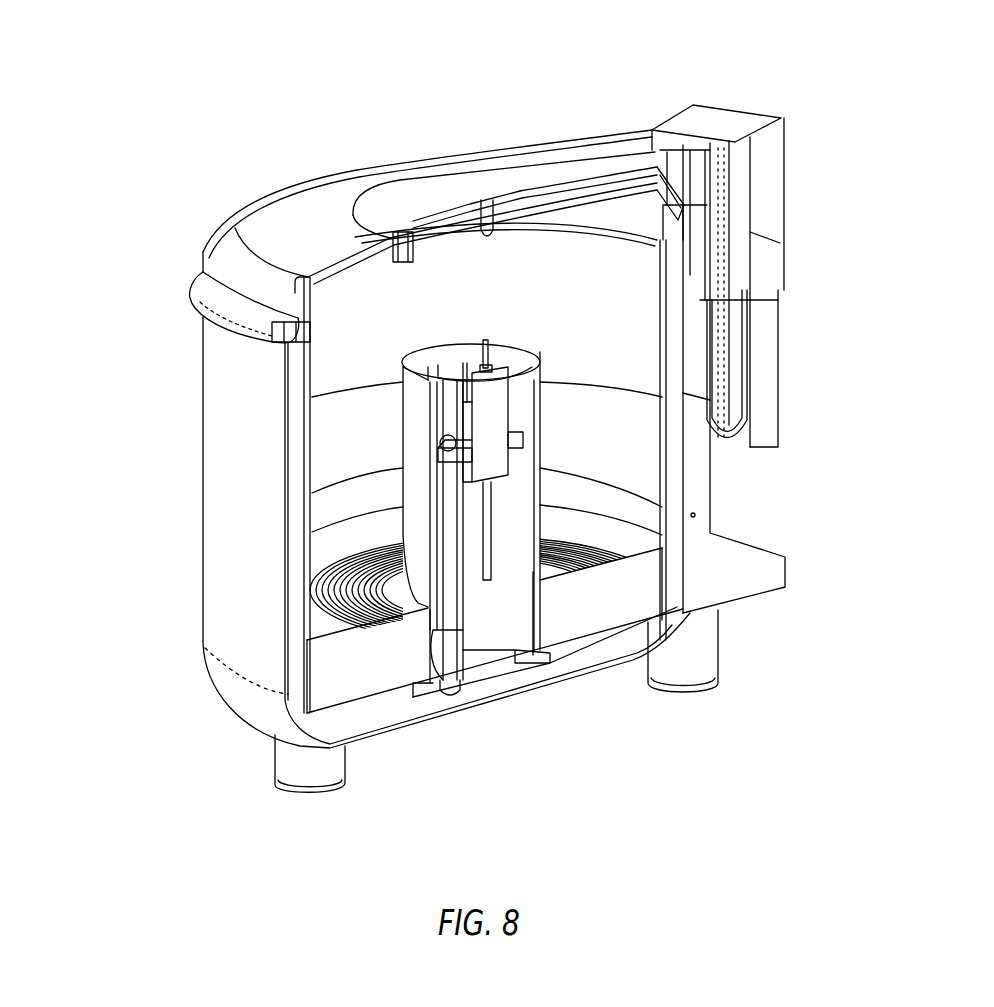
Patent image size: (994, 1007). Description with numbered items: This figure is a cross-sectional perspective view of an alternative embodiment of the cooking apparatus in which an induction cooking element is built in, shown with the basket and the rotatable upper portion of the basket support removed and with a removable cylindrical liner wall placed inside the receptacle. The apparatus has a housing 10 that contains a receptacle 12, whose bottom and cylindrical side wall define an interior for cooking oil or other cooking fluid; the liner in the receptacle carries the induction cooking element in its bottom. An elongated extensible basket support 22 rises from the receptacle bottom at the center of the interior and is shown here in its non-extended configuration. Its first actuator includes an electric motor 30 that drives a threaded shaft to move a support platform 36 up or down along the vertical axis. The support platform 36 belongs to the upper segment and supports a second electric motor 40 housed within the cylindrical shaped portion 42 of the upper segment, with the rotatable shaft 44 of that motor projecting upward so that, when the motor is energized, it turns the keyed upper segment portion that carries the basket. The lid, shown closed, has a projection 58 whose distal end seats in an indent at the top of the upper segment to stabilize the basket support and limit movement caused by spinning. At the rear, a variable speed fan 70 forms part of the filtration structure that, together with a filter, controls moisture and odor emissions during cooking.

The housing 10 is at (253, 453).
The receptacle 12 is at (683, 503).
The elongated extensible basket support 22 is at (545, 375).
The electric motor 30 is at (458, 668).
The support platform 36 is at (458, 345).
The electric motor 40 is at (487, 410).
The cylindrical shaped portion 42 is at (510, 505).
The rotatable shaft 44 is at (487, 352).
The projection 58 is at (490, 203).
The variable speed fan 70 is at (760, 357).